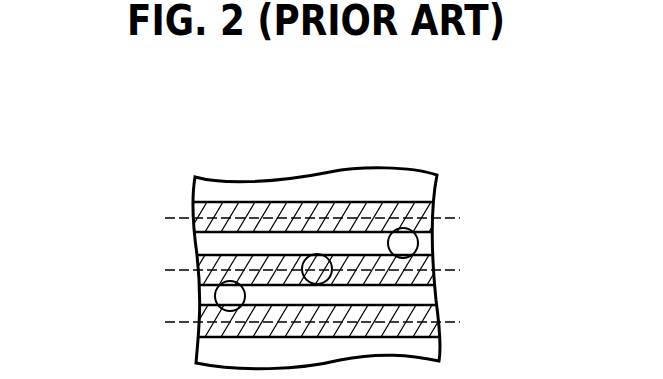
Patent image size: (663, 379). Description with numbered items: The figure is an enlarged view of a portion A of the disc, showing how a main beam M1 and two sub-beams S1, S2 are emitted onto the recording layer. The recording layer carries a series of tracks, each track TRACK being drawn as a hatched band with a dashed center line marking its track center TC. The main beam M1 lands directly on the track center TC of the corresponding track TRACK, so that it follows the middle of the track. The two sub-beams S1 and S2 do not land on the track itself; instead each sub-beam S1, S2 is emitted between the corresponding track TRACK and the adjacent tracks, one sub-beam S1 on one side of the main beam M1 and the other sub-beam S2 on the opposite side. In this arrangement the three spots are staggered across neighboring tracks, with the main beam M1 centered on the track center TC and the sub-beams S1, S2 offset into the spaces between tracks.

The portion A is at (480, 171).
The track TRACK is at (197, 300).
The track center TC is at (447, 318).
The sub-beam S2 is at (231, 281).
The main beam M1 is at (315, 254).
The sub-beam S1 is at (405, 228).